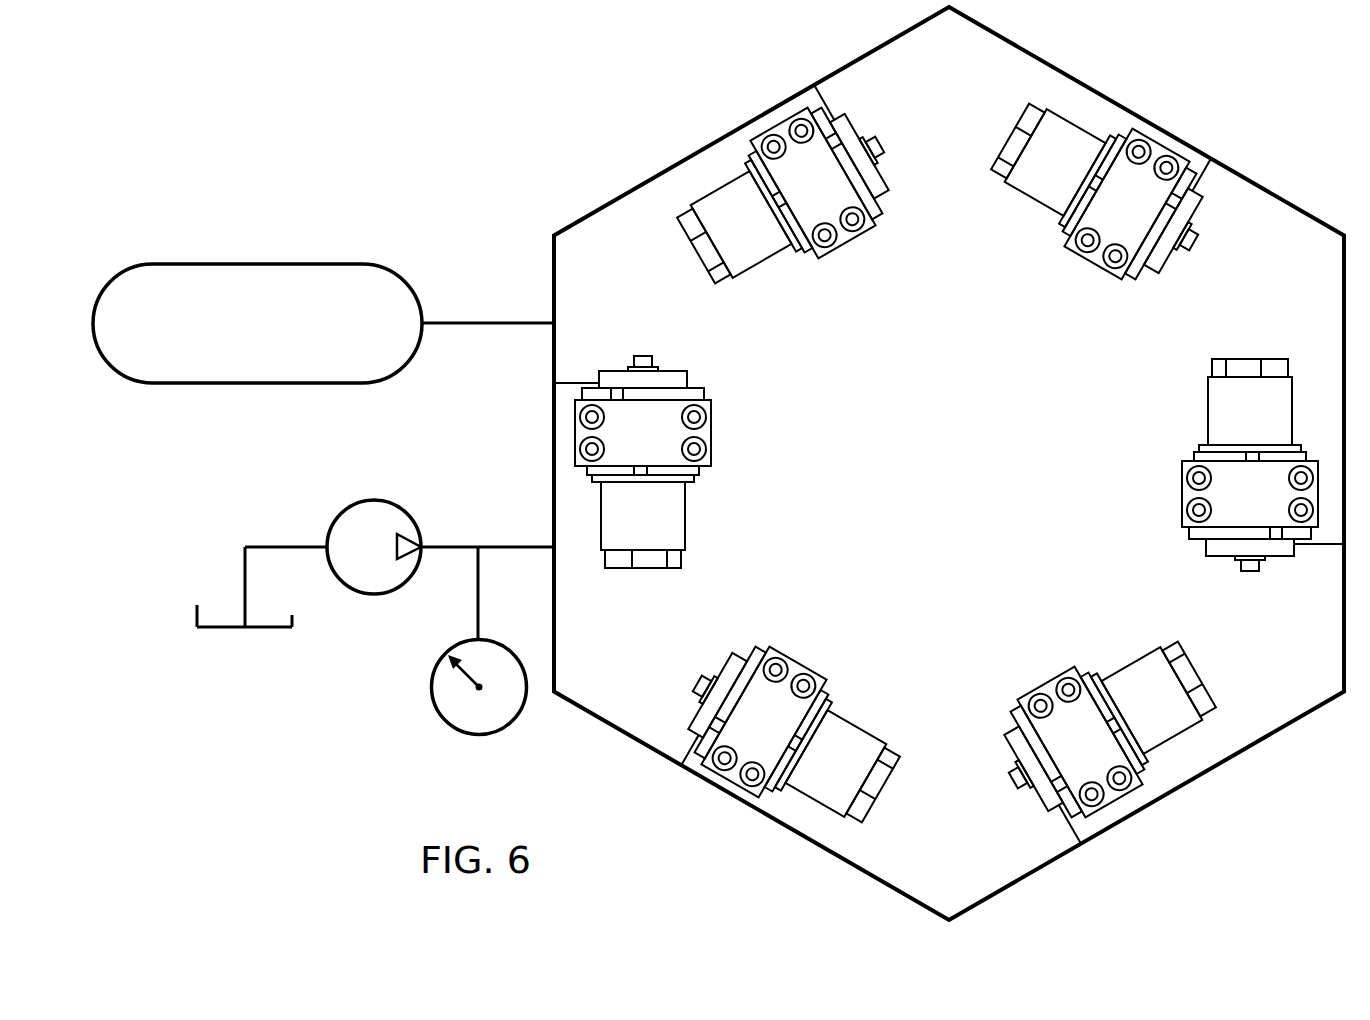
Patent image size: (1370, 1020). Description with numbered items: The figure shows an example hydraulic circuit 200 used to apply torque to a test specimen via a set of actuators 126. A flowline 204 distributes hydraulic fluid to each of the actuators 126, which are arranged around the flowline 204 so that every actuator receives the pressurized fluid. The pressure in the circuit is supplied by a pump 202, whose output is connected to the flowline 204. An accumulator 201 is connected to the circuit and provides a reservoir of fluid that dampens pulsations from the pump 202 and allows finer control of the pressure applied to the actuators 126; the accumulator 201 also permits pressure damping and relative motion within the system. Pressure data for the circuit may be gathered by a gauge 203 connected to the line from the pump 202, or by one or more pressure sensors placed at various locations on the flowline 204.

The hydraulic circuit 200 is at (395, 116).
The accumulator 201 is at (255, 264).
The pump 202 is at (372, 500).
The gauge 203 is at (430, 686).
The flowline 204 is at (750, 118).
The actuators 126 is at (712, 433).